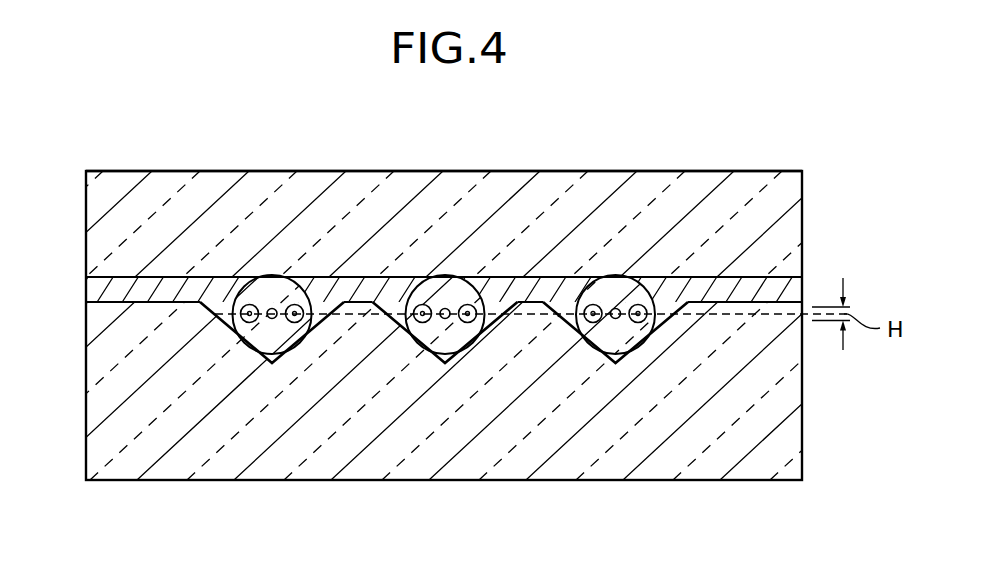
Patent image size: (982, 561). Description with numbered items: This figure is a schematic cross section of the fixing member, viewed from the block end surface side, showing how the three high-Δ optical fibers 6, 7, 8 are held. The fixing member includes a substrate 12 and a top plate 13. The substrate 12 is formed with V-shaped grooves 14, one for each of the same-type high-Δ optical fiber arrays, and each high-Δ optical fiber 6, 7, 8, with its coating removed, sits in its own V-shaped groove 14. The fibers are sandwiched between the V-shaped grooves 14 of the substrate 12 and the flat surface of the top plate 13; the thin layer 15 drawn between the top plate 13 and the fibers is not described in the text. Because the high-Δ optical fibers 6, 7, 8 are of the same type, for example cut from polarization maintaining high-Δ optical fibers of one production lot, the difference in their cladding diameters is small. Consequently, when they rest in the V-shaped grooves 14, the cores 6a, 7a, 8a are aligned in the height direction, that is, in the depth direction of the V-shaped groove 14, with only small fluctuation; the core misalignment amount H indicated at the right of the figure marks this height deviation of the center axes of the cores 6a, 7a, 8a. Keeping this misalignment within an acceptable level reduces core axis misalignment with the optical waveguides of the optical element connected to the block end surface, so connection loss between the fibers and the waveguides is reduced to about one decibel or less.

The high-Δ optical fiber 6 is at (275, 230).
The core 6a is at (272, 309).
The high-Δ optical fiber 7 is at (618, 230).
The core 7a is at (616, 309).
The high-Δ optical fiber 8 is at (447, 230).
The core 8a is at (446, 309).
The substrate 12 is at (768, 473).
The top plate 13 is at (767, 171).
The V-shaped groove 14 is at (208, 298).
The adhesive layer 15 is at (86, 288).